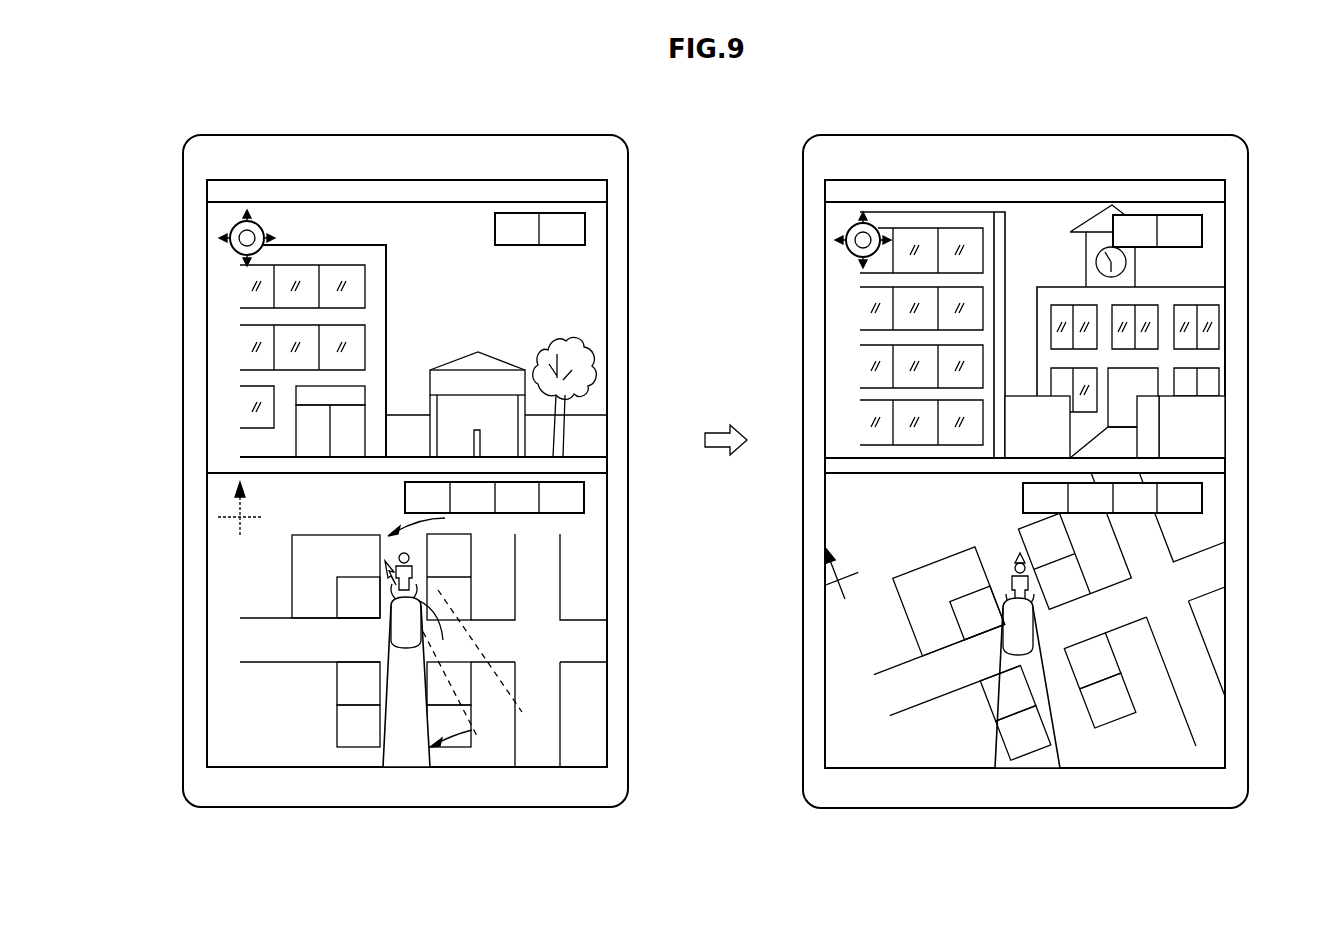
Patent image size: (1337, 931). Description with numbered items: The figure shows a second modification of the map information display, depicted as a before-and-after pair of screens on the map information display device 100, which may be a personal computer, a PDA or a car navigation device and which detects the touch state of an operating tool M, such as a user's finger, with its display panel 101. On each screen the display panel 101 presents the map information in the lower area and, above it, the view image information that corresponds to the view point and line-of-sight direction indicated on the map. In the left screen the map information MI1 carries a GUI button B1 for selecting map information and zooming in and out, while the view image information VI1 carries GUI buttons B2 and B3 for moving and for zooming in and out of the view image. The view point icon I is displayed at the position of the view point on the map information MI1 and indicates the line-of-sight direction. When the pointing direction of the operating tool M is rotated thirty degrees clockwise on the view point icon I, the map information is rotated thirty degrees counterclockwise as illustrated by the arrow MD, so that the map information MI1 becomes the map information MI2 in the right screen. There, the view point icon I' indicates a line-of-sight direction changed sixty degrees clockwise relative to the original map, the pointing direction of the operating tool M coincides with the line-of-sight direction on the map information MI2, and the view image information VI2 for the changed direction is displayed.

The map information display device 100 is at (572, 132).
The display panel 101 is at (587, 171).
The GUI button B2 is at (228, 237).
The GUI button B3 is at (587, 229).
The GUI button B1 is at (585, 499).
The view image information VI1 is at (590, 273).
The view image information VI2 is at (1208, 273).
The map information MI1 is at (590, 533).
The map information MI2 is at (1210, 533).
The arrow MD is at (445, 518).
The view point icon I is at (281, 577).
The view point icon I' is at (901, 572).
The operating tool M is at (382, 641).